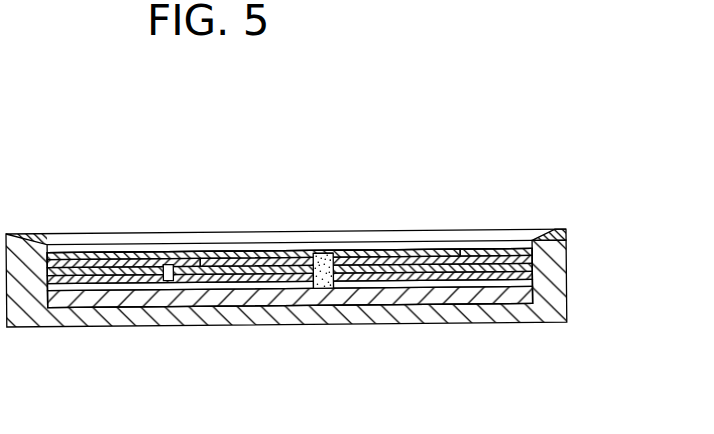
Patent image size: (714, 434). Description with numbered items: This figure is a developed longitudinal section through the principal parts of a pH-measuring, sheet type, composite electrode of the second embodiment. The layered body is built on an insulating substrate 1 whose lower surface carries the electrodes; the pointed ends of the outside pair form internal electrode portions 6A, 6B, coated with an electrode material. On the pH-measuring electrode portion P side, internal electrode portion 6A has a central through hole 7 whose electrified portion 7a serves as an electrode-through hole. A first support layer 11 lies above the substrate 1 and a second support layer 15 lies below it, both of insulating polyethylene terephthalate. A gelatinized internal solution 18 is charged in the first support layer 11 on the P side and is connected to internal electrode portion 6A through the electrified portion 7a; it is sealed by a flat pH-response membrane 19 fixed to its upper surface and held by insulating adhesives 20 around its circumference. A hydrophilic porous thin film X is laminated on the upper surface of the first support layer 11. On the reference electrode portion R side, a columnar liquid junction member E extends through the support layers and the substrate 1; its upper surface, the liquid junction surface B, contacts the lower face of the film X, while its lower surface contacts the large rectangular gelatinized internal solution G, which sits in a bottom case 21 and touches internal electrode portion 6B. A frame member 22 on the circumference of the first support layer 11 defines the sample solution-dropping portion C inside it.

The substrate 1 is at (75, 264).
The adhesives 20 is at (103, 258).
The gelatinized internal solution 18 is at (165, 268).
The pH-response membrane 19 is at (198, 265).
The pH-measuring electrode portion P is at (228, 230).
The hydrophilic porous thin film X is at (311, 250).
The sample solution-dropping portion C is at (377, 243).
The reference electrode portion R is at (431, 230).
The frame member 22 is at (558, 229).
The bottom case 21 is at (558, 287).
The second support layer 15 is at (86, 285).
The internal electrode portion 6A is at (146, 284).
The through hole 7 is at (172, 283).
The electrified portion 7a is at (228, 288).
The liquid junction member E is at (320, 292).
The liquid junction surface B is at (331, 290).
The gelatinized internal solution G is at (380, 290).
The internal electrode portion 6B is at (421, 297).
The first support layer 11 is at (513, 257).